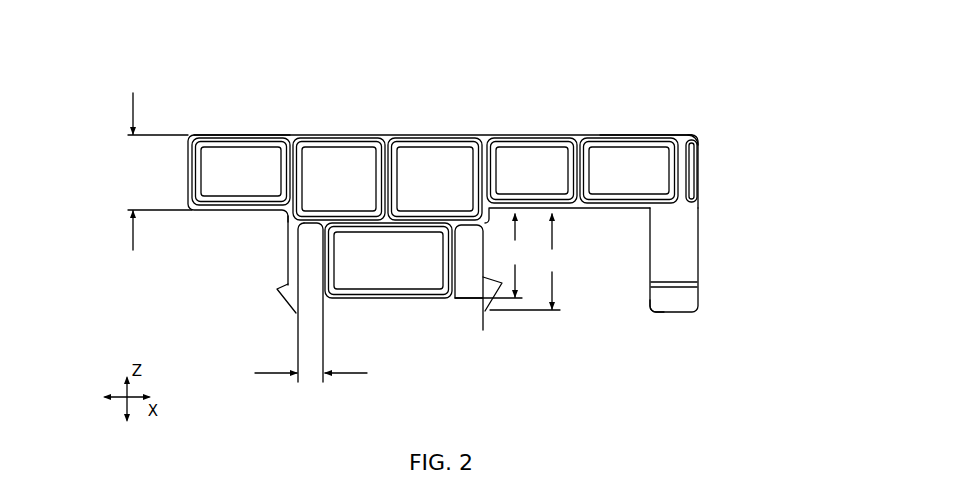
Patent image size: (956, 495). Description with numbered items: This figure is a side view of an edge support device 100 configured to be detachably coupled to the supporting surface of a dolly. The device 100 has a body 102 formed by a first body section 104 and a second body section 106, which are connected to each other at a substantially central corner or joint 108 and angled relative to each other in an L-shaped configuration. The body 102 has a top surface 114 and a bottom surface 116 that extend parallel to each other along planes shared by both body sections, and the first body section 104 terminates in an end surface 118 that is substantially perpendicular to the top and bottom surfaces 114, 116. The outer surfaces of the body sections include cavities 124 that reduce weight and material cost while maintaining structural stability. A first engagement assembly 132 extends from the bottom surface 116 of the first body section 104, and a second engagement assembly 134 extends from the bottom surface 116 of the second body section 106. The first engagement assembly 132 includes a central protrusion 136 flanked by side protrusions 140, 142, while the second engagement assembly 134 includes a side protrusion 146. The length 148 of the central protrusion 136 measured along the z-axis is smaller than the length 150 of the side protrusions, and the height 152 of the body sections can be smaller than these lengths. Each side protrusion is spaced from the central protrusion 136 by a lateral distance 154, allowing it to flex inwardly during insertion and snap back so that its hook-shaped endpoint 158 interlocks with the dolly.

The edge support device 100 is at (605, 75).
The body 102 is at (459, 133).
The first body section 104 is at (237, 128).
The second body section 106 is at (678, 112).
The joint 108 is at (698, 133).
The top surface 114 is at (334, 143).
The bottom surface 116 is at (605, 210).
The end surface 118 is at (188, 187).
The cavity 124 is at (528, 155).
The first engagement assembly 132 is at (367, 312).
The second engagement assembly 134 is at (706, 255).
The central protrusion 136 is at (418, 300).
The side protrusion 140 is at (287, 243).
The side protrusion 142 is at (483, 270).
The side protrusion 146 is at (667, 258).
The length of central protrusion 148 is at (491, 255).
The length of side protrusions 150 is at (527, 261).
The height of body sections 152 is at (130, 237).
The lateral distance 154 is at (268, 373).
The endpoint 158 is at (280, 300).